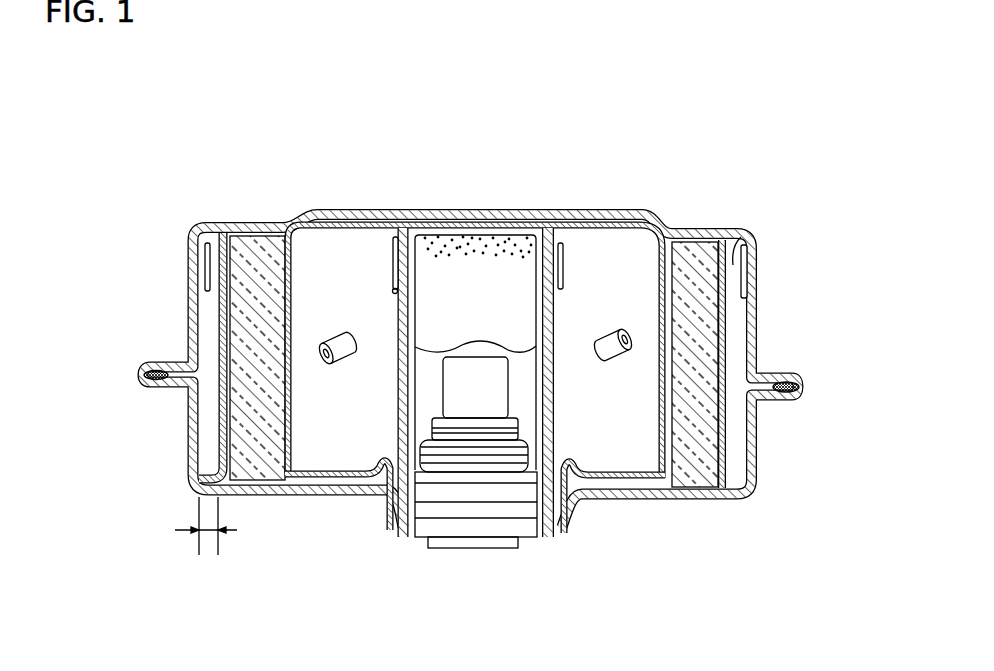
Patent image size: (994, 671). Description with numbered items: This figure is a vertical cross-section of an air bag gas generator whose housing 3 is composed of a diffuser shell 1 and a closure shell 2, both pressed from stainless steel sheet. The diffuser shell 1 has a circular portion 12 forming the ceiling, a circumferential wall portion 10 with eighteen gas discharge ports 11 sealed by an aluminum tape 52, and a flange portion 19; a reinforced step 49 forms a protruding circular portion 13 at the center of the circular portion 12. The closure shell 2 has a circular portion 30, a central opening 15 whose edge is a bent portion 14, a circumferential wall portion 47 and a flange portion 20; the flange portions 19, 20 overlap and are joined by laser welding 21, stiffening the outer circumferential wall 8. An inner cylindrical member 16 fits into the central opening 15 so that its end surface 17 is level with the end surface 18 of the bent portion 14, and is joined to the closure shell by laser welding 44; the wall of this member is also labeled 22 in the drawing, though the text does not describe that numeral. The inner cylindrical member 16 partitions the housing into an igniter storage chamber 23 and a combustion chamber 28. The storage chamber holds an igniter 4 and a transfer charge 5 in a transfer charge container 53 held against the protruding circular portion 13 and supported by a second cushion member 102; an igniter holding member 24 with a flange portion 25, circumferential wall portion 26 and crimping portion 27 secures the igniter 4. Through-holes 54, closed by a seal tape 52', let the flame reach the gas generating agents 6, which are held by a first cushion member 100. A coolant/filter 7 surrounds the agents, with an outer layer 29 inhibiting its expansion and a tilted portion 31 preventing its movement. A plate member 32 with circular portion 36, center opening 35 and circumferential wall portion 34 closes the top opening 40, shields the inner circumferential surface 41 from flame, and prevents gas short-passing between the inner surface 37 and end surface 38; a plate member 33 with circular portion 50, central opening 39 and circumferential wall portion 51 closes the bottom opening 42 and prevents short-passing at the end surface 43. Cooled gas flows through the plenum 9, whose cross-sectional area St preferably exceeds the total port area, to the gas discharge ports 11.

The diffuser shell 1 is at (629, 257).
The closure shell 2 is at (267, 498).
The housing 3 is at (570, 192).
The igniter 4 is at (394, 335).
The transfer charge 5 is at (487, 210).
The gas generating agents 6 is at (334, 333).
The coolant/filter 7 is at (633, 500).
The outer circumferential wall 8 is at (762, 313).
The plenum 9 is at (768, 236).
The circumferential wall portion 10 is at (189, 340).
The gas discharge ports 11 is at (200, 258).
The circular portion 12 is at (762, 222).
The protruding circular portion 13 is at (381, 203).
The bent portion 14 is at (565, 538).
The central opening 15 is at (418, 538).
The inner cylindrical member 16 is at (626, 203).
The end surface 17 is at (400, 540).
The end surface 18 is at (384, 530).
The flange portion 19 is at (803, 368).
The flange portion 20 is at (794, 400).
The laser welding 21 is at (798, 386).
The partition wall 22 is at (560, 322).
The igniter storage chamber 23 is at (458, 210).
The igniter holding member 24 is at (557, 473).
The flange portion 25 is at (541, 466).
The circumferential wall portion 26 is at (527, 504).
The crimping portion 27 is at (531, 540).
The combustion chamber 28 is at (668, 226).
The outer layer 29 is at (752, 462).
The circular portion 30 is at (675, 501).
The tilted portion 31 is at (743, 501).
The plate member 32 is at (360, 207).
The plate member 33 is at (597, 499).
The circumferential wall portion 34 is at (297, 219).
The center opening 35 is at (558, 240).
The circular portion 36 is at (327, 208).
The inner surface 37 is at (200, 222).
The end surface 38 is at (255, 221).
The central opening 39 is at (400, 383).
The opening 40 is at (717, 226).
The inner circumferential surface 41 is at (722, 355).
The opening 42 is at (646, 498).
The end surface 43 is at (700, 501).
The laser welding 44 is at (550, 540).
The circumferential wall portion 47 is at (189, 440).
The reinforced step 49 is at (293, 218).
The circular portion 50 is at (292, 500).
The circumferential wall portion 51 is at (302, 462).
The aluminum tape 52 is at (142, 278).
The seal tape 52' is at (369, 312).
The transfer charge container 53 is at (322, 500).
The through-holes 54 is at (395, 268).
The first cushion member 100 is at (609, 500).
The second cushion member 102 is at (439, 208).
The area of gas channel cross-section St is at (210, 533).